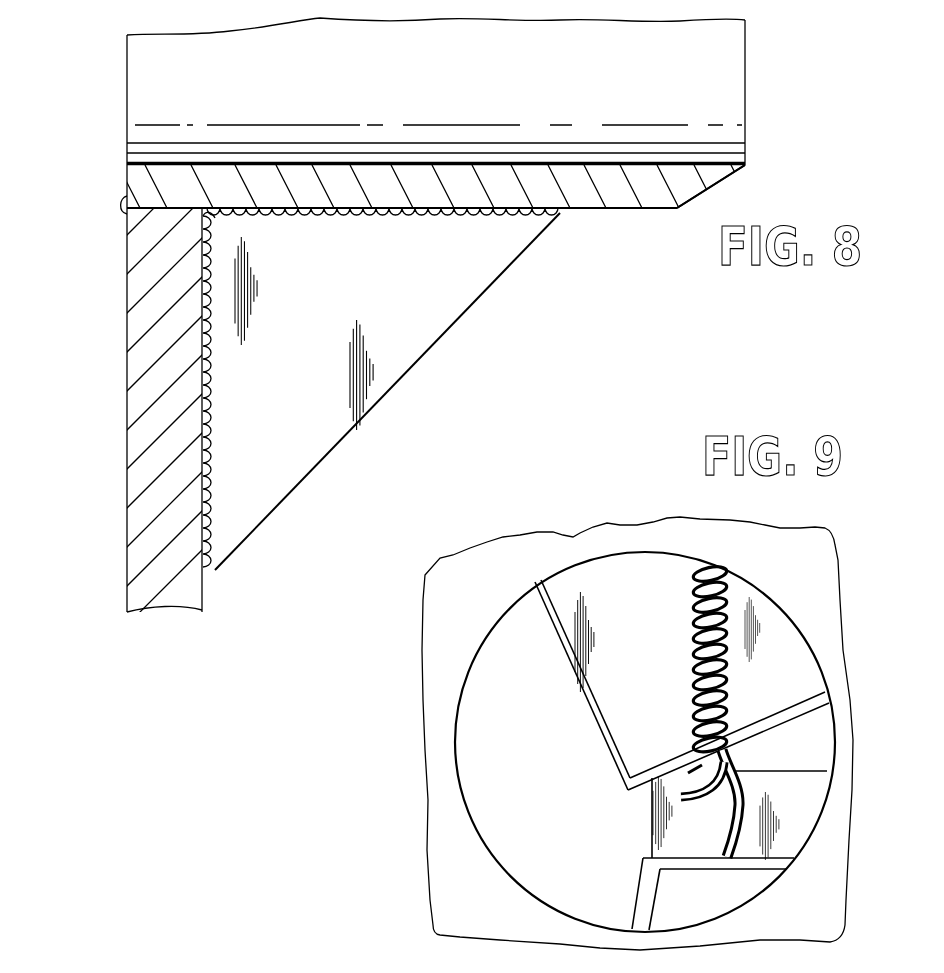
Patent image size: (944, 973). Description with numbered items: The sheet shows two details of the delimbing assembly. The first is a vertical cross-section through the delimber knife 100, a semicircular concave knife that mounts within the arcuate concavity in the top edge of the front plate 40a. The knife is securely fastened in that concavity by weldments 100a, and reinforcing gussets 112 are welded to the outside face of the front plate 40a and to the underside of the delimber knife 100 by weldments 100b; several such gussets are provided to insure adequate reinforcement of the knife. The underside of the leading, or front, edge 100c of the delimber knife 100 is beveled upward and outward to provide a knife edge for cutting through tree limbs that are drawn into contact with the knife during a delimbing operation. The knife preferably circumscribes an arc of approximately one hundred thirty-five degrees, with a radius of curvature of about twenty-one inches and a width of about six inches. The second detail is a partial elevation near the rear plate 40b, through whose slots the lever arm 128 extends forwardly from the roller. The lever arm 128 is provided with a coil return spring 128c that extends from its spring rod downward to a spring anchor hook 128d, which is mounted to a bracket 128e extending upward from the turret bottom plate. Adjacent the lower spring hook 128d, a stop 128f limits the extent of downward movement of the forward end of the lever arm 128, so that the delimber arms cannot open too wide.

In FIG. 8, the delimber knife 100 is at (457, 73).
In FIG. 8, the weldments 100a is at (124, 200).
In FIG. 8, the weldments 100b is at (360, 218).
In FIG. 8, the leading edge 100c is at (700, 205).
In FIG. 8, the front plate 40a is at (147, 346).
In FIG. 8, the reinforcing gussets 112 is at (463, 305).
In FIG. 9, the rear plate 40b is at (815, 577).
In FIG. 9, the lever arm 128 is at (650, 617).
In FIG. 9, the coil return spring 128c is at (690, 642).
In FIG. 9, the spring anchor hook 128d is at (736, 776).
In FIG. 9, the stop 128f is at (650, 818).
In FIG. 9, the bracket 128e is at (640, 903).